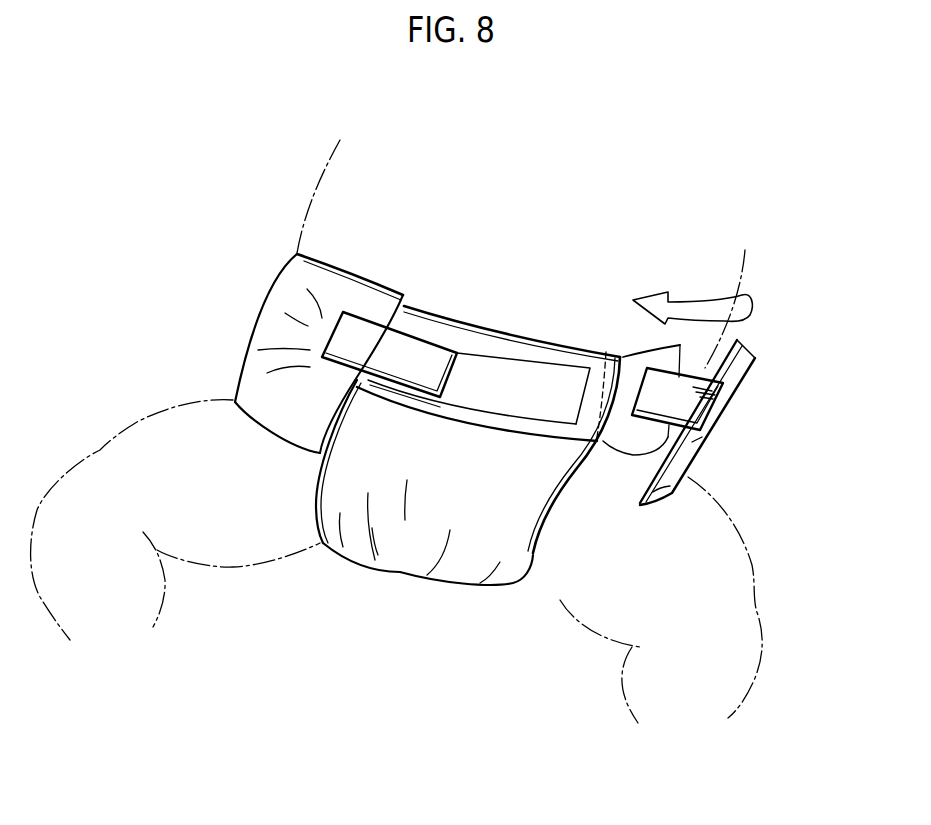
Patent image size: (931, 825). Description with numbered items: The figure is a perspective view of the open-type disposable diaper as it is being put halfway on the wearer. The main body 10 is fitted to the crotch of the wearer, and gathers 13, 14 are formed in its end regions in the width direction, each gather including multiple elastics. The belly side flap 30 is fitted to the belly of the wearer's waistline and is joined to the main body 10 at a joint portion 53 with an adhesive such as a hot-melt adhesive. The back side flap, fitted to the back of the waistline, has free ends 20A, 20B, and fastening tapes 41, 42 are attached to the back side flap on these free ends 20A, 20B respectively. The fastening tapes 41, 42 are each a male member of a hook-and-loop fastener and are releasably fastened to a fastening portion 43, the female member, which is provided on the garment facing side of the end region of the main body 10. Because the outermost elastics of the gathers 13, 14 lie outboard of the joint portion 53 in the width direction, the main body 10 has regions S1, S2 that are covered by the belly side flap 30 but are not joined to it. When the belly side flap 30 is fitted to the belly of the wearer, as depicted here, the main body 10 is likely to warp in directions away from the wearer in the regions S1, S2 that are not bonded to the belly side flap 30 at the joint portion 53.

The main body 10 is at (405, 565).
The gather 13 is at (537, 553).
The gather 14 is at (320, 528).
The free end 20A is at (747, 347).
The free end 20B is at (310, 303).
The belly side flap 30 is at (460, 337).
The fastening tape 41 is at (698, 415).
The fastening tape 42 is at (337, 348).
The fastening portion 43 is at (477, 360).
The joint portion 53 is at (606, 352).
The region S1 is at (758, 360).
The region S2 is at (322, 543).